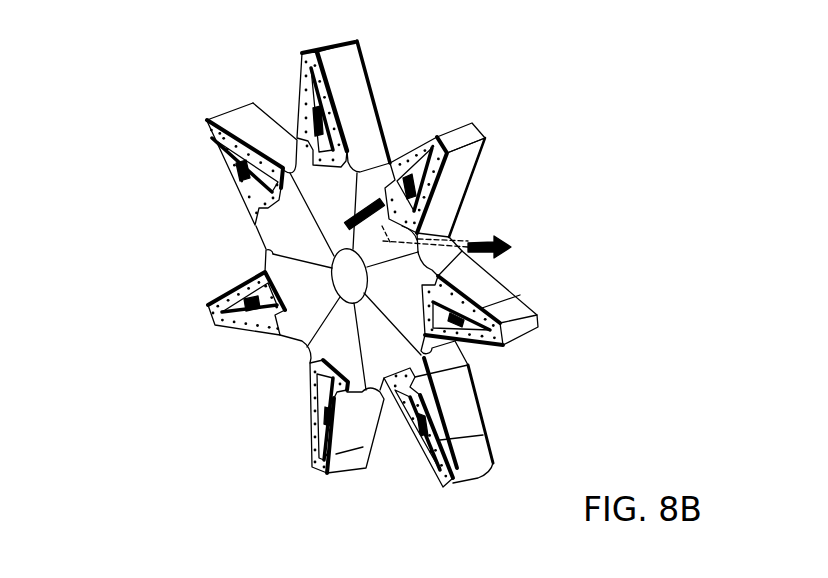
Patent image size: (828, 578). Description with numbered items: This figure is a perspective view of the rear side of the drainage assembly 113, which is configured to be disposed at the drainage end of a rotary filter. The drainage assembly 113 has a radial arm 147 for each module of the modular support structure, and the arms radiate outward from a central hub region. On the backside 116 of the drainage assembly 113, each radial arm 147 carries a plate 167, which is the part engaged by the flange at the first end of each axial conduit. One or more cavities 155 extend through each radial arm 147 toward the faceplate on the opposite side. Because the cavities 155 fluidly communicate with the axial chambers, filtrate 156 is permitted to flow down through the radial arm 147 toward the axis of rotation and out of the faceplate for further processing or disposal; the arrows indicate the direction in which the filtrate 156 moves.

The drainage assembly 113 is at (122, 208).
The backside 116 is at (283, 234).
The radial arm 147 is at (350, 82).
The cavity 155 is at (441, 135).
The filtrate 156 is at (358, 206).
The plate 167 is at (298, 128).